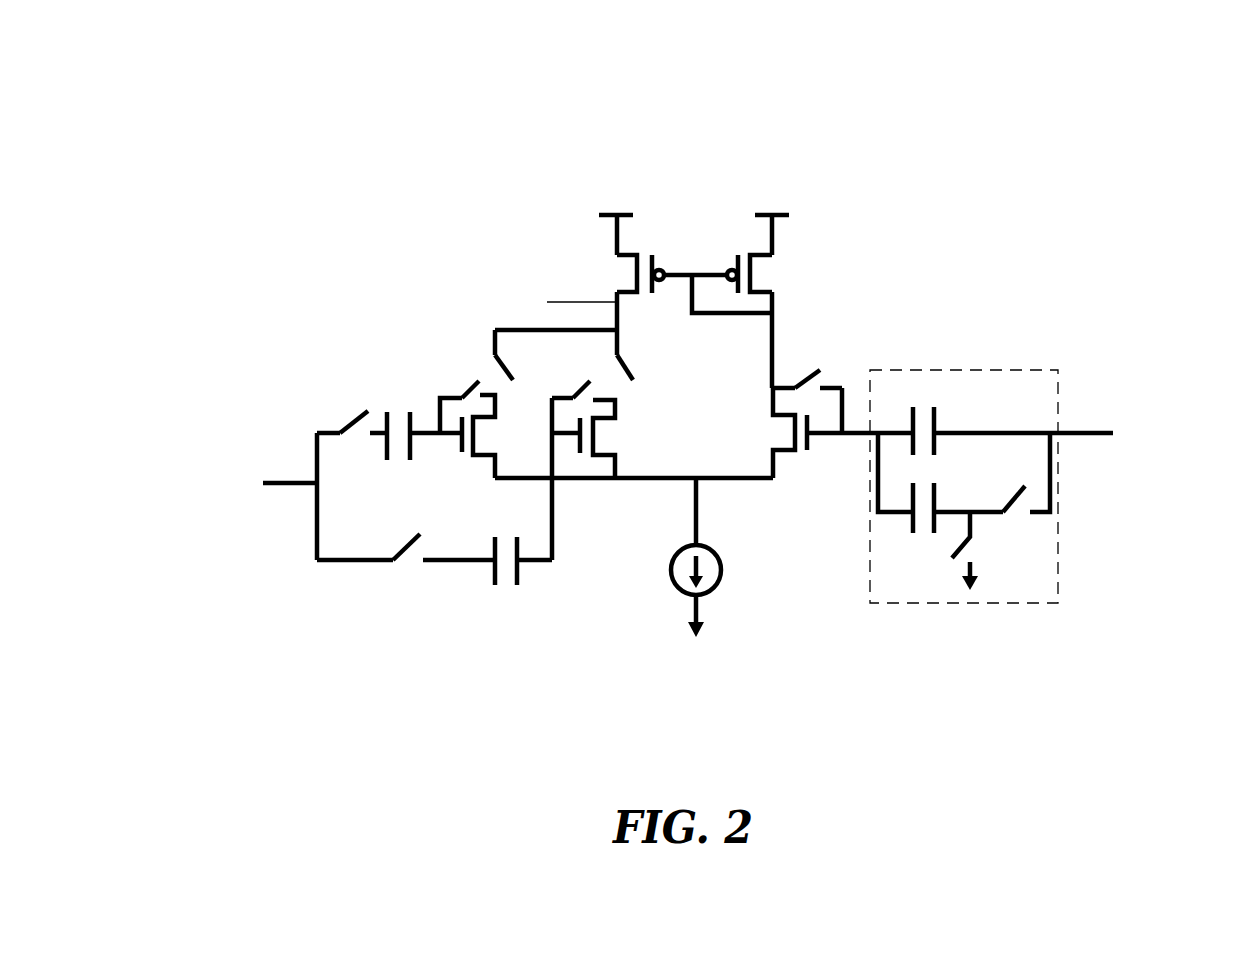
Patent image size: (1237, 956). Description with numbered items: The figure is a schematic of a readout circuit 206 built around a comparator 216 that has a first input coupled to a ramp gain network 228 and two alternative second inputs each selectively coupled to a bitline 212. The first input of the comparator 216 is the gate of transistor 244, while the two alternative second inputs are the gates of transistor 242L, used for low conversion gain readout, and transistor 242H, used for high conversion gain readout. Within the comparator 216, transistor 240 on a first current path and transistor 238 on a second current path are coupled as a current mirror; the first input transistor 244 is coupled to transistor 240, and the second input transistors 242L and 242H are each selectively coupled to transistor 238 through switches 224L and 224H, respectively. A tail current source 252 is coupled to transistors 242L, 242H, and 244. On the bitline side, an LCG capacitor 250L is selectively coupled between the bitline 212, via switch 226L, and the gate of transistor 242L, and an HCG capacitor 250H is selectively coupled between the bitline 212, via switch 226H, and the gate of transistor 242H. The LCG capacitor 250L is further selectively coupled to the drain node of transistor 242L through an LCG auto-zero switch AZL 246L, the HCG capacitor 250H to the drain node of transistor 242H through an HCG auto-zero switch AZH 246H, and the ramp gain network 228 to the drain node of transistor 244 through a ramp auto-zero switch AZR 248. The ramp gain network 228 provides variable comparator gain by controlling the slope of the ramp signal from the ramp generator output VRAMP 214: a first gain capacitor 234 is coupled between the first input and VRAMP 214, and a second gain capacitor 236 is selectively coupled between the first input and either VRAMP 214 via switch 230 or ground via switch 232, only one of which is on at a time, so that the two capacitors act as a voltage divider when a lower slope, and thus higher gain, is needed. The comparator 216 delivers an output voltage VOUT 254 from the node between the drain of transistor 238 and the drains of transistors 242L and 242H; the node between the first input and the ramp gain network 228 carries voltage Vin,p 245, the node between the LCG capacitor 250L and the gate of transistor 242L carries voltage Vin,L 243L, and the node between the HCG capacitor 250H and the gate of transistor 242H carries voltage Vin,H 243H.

The readout circuit 206 is at (1078, 74).
The comparator 216 is at (612, 156).
The bitline 212 is at (221, 459).
The ramp generator output VRAMP 214 is at (1193, 407).
The switch 224H is at (500, 372).
The switch 224L is at (637, 368).
The switch 226H is at (351, 418).
The switch 226L is at (400, 538).
The ramp gain network 228 is at (1063, 368).
The switch 230 is at (1020, 514).
The switch 232 is at (964, 568).
The first gain capacitor 234 is at (942, 411).
The second gain capacitor 236 is at (942, 492).
The transistor 238 is at (620, 278).
The transistor 240 is at (776, 280).
The transistor 242H is at (481, 438).
The transistor 242L is at (622, 420).
The voltage Vin,H 243H is at (448, 474).
The voltage Vin,L 243L is at (584, 578).
The transistor 244 is at (774, 436).
The voltage Vin,p 245 is at (841, 472).
The HCG auto-zero switch AZH 246H is at (425, 364).
The LCG auto-zero switch AZL 246L is at (574, 377).
The ramp auto-zero switch AZR 248 is at (817, 338).
The HCG capacitor 250H is at (386, 452).
The LCG capacitor 250L is at (486, 575).
The tail current source 252 is at (722, 570).
The output voltage VOUT 254 is at (481, 305).